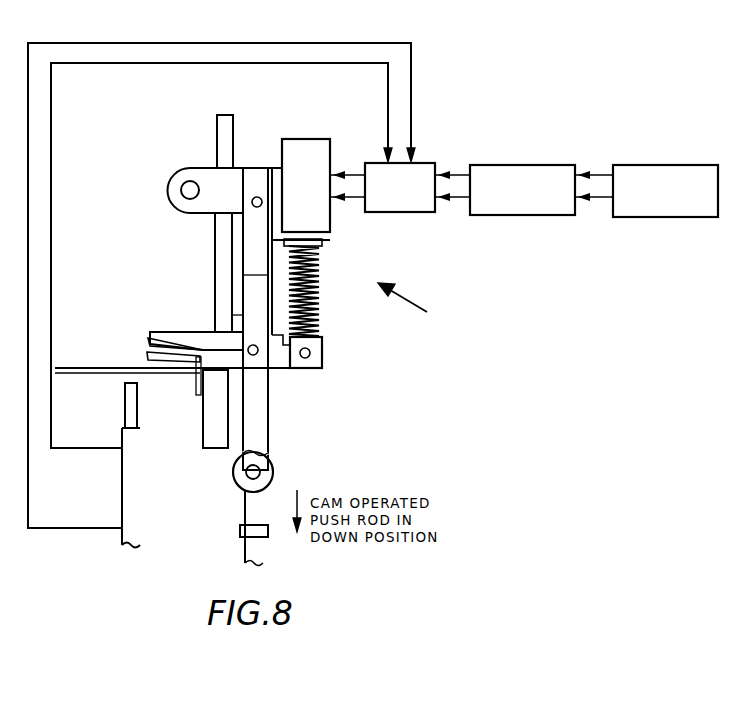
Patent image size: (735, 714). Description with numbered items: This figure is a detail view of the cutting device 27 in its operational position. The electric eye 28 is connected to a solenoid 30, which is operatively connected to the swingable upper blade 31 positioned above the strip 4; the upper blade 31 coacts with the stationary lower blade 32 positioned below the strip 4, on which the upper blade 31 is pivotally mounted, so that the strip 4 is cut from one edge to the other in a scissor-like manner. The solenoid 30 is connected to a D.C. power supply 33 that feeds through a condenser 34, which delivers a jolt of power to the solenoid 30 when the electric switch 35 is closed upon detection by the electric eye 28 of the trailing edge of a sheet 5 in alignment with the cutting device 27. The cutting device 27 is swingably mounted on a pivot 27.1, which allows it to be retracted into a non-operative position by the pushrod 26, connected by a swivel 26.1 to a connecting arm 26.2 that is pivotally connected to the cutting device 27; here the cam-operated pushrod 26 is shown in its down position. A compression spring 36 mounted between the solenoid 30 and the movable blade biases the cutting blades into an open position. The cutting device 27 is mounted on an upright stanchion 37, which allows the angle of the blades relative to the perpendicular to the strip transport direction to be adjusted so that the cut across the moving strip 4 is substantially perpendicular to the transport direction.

The pivot 27.1 is at (190, 182).
The upright stanchion 37 is at (222, 263).
The solenoid 30 is at (307, 153).
The electric switch 35 is at (423, 163).
The condenser 34 is at (528, 170).
The D.C. power supply 33 is at (668, 165).
The compression spring 36 is at (322, 300).
The connecting arm 26.2 is at (260, 408).
The swingable upper blade 31 is at (178, 330).
The strip 4 is at (148, 343).
The stationary lower blade 32 is at (175, 358).
The sheet 5 is at (100, 378).
The electric eye 28 is at (130, 497).
The swivel 26.1 is at (268, 470).
The pushrod 26 is at (252, 545).
The cutting device 27 is at (416, 303).